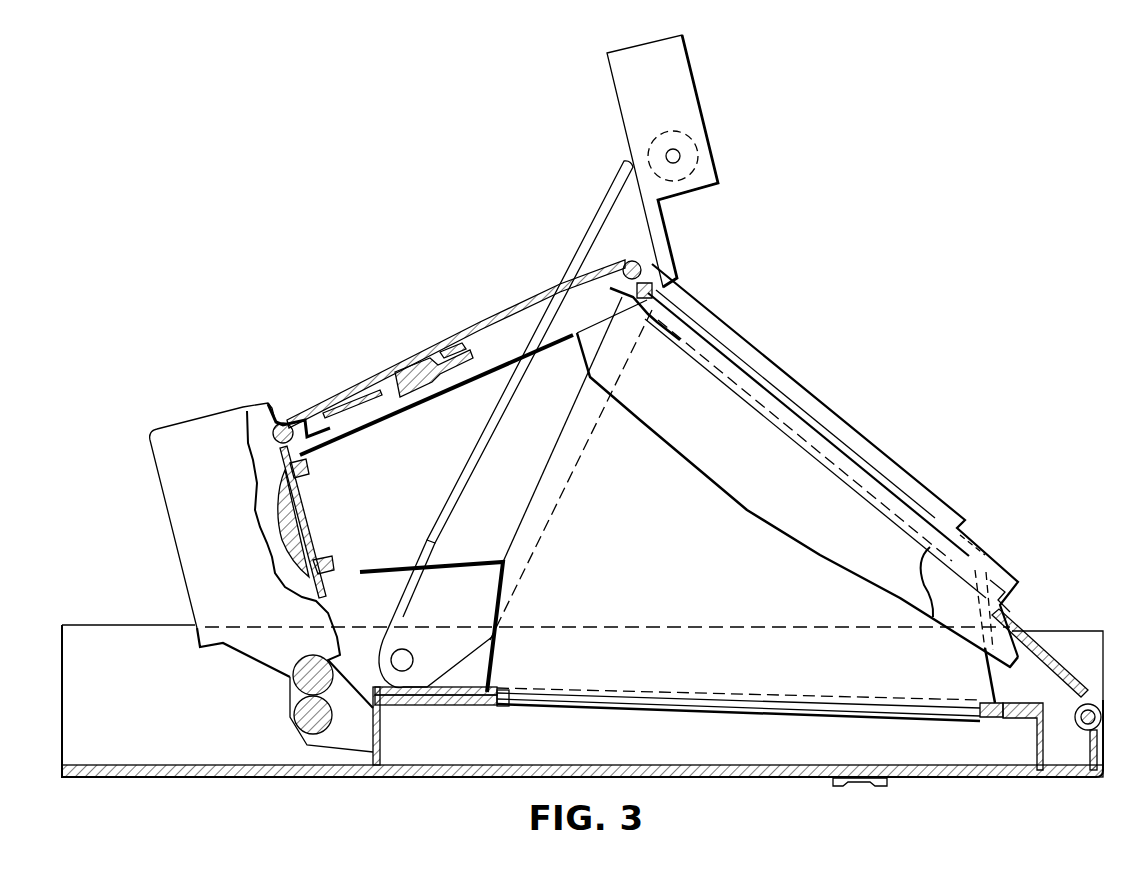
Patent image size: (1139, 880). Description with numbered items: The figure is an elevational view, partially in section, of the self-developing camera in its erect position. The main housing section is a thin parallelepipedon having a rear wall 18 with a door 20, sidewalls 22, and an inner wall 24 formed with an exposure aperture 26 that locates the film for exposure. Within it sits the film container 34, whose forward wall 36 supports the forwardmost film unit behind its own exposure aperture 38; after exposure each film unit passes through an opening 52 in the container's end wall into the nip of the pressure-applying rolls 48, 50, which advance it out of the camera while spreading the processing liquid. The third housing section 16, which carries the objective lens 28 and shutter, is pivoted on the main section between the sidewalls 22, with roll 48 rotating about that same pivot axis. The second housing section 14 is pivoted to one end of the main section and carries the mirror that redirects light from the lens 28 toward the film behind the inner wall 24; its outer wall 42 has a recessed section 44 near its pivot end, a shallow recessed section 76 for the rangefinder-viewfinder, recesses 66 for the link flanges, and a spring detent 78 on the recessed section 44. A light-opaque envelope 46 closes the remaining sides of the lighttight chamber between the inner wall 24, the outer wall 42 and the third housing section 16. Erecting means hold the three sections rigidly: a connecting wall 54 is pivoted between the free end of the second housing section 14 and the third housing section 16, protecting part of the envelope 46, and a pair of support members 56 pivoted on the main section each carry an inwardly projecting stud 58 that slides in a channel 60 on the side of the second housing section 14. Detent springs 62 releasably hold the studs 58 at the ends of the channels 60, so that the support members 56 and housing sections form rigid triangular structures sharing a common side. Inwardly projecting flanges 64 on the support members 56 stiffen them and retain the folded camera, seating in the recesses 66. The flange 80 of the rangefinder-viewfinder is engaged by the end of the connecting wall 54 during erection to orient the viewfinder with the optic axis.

The second housing section 14 is at (831, 398).
The third housing section 16 is at (174, 421).
The rear wall 18 is at (733, 781).
The door 20 is at (968, 778).
The sidewalls 22 is at (116, 694).
The inner wall 24 is at (1030, 705).
The exposure aperture 26 is at (505, 689).
The objective lens 28 is at (299, 516).
The container 34 is at (484, 779).
The forward wall 36 is at (425, 702).
The exposure aperture 38 is at (503, 700).
The outer wall 42 is at (843, 420).
The recessed section 44 is at (996, 617).
The envelope 46 is at (380, 424).
The pressure-applying roll 48 is at (296, 684).
The pressure-applying roll 50 is at (300, 727).
The opening 52 is at (386, 711).
The wall 54 is at (488, 322).
The support members 56 is at (422, 604).
The stud 58 is at (662, 288).
The channels 60 is at (858, 458).
The detent springs 62 is at (666, 306).
The flanges 64 is at (522, 315).
The recesses 66 is at (850, 430).
The recessed section 76 is at (975, 562).
The spring detent 78 is at (1005, 602).
The flange 80 is at (653, 222).